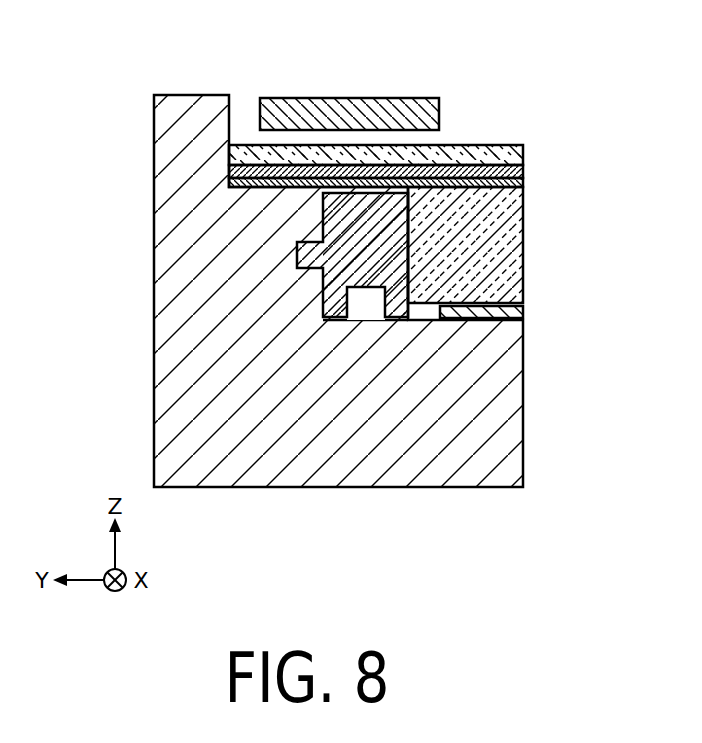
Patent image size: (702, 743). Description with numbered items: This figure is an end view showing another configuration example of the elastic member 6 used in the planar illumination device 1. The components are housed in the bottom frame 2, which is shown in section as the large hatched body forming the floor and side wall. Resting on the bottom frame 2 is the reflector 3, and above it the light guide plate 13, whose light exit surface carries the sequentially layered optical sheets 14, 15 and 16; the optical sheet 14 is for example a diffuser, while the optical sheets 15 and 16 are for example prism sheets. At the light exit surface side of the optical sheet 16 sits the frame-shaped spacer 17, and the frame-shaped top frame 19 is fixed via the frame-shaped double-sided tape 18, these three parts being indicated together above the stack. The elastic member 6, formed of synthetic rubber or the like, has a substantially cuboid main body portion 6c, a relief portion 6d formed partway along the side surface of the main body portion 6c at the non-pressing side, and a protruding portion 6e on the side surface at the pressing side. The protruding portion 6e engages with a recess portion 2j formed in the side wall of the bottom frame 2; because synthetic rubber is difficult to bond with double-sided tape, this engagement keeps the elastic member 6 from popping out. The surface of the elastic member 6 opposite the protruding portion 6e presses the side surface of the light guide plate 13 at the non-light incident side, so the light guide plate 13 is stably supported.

The planar illumination device 1 is at (137, 68).
The bottom frame 2 is at (160, 284).
The recess portion 2j is at (296, 250).
The reflector 3 is at (515, 309).
The elastic member 6 is at (362, 288).
The main body portion 6c is at (397, 255).
The relief portion 6d is at (375, 318).
The protruding portion 6e is at (307, 257).
The light guide plate 13 is at (515, 238).
The optical sheet 14 is at (523, 184).
The optical sheet 15 is at (523, 172).
The optical sheet 16 is at (523, 147).
The spacer 17 is at (340, 98).
The double-sided tape 18 is at (349, 114).
The top frame 19 is at (349, 114).